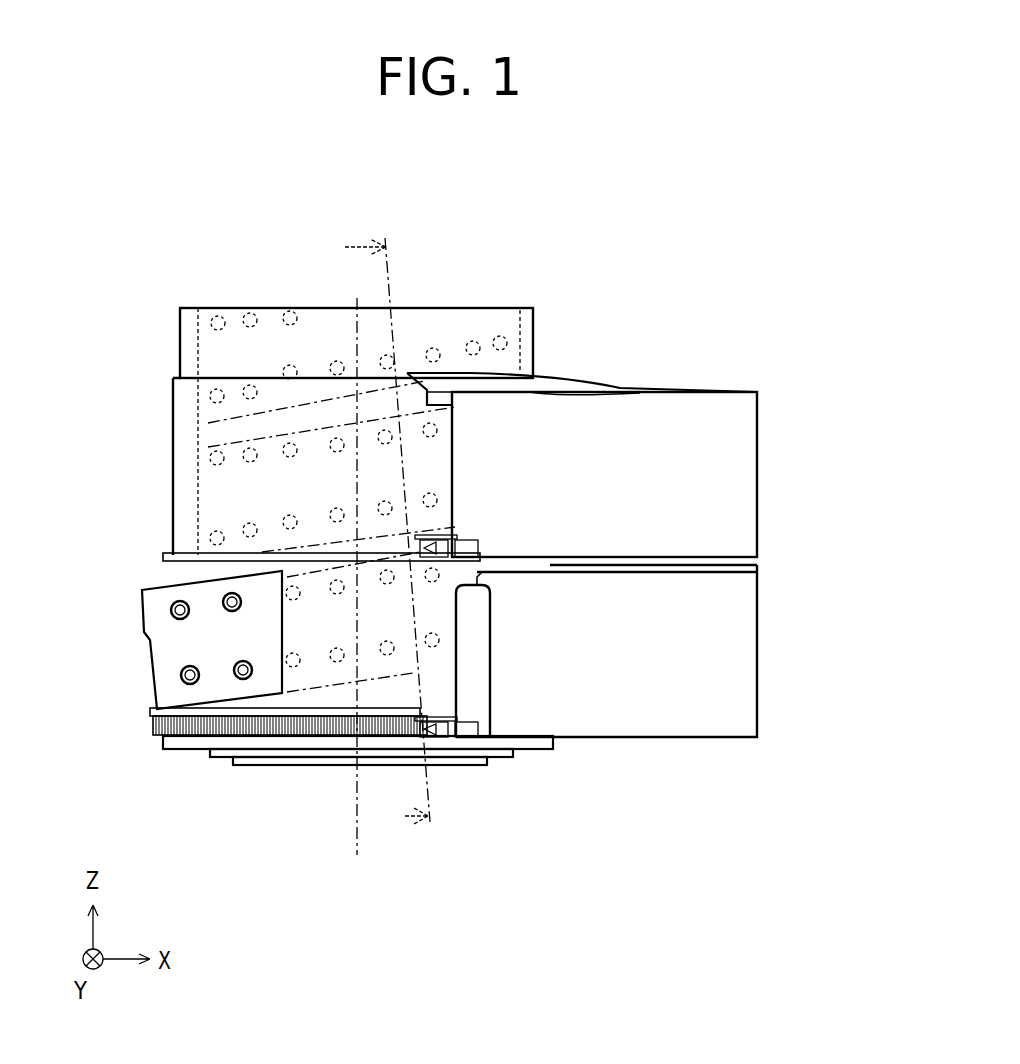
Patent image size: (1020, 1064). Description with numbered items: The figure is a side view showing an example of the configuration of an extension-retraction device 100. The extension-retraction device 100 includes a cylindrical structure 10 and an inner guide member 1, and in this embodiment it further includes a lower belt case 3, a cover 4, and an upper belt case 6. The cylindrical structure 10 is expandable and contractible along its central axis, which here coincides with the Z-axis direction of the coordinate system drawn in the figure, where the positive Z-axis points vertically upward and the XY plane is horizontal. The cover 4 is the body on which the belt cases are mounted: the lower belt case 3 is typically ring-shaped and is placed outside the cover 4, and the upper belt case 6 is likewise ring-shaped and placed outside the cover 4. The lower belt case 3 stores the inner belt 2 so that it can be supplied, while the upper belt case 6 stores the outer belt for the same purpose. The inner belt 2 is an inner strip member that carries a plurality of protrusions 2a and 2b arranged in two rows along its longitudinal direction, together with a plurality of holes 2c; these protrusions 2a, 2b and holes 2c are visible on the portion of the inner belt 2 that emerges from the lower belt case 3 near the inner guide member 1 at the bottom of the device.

The extension-retraction device 100 is at (850, 243).
The cylindrical structure 10 is at (541, 256).
The inner guide member 1 is at (285, 752).
The inner belt 2 is at (192, 360).
The protrusion 2a is at (172, 607).
The protrusion 2b is at (182, 674).
The hole 2c is at (174, 616).
The lower belt case 3 is at (742, 648).
The cover 4 is at (182, 440).
The upper belt case 6 is at (753, 432).